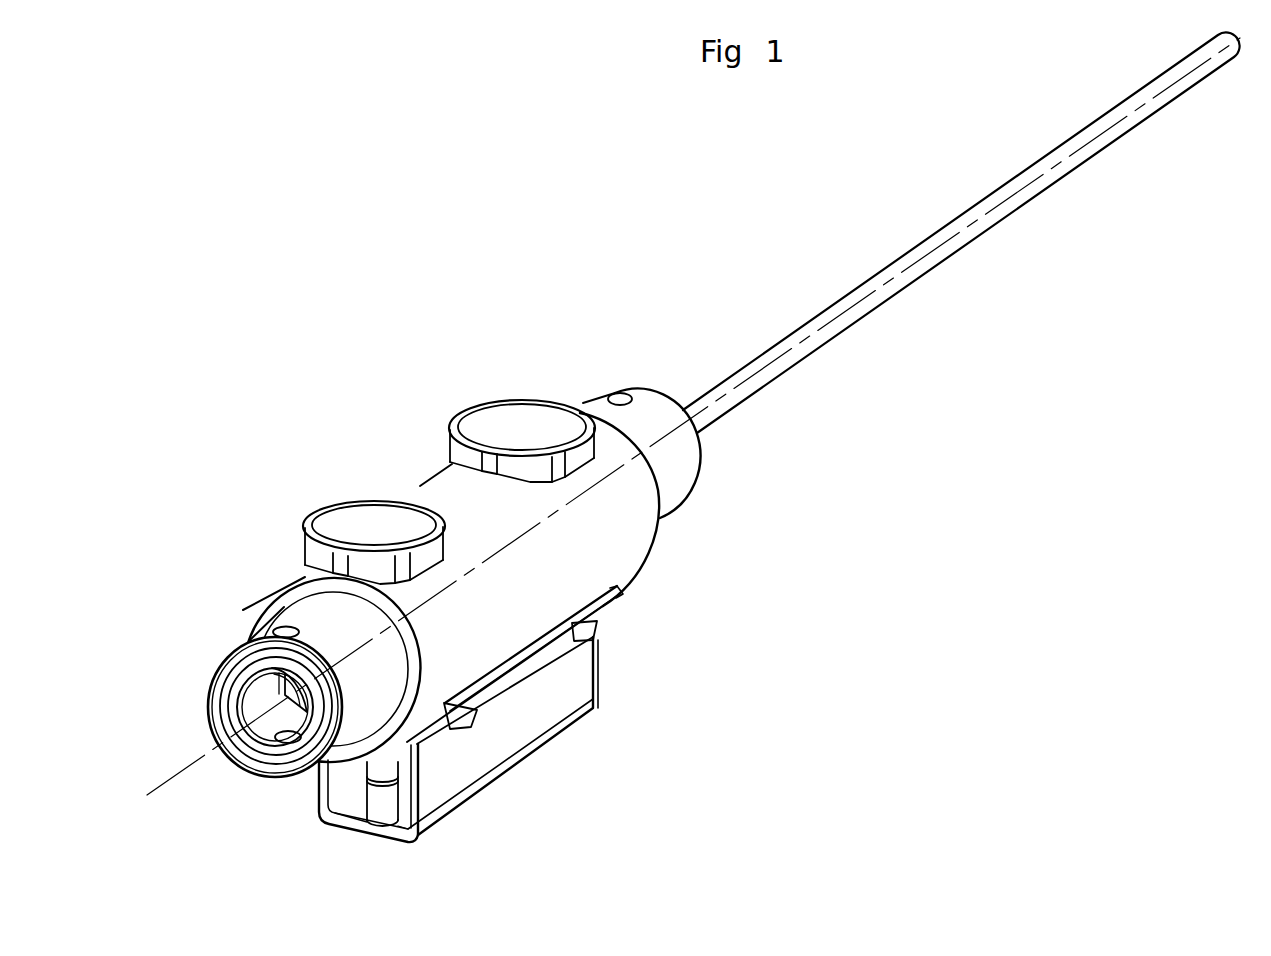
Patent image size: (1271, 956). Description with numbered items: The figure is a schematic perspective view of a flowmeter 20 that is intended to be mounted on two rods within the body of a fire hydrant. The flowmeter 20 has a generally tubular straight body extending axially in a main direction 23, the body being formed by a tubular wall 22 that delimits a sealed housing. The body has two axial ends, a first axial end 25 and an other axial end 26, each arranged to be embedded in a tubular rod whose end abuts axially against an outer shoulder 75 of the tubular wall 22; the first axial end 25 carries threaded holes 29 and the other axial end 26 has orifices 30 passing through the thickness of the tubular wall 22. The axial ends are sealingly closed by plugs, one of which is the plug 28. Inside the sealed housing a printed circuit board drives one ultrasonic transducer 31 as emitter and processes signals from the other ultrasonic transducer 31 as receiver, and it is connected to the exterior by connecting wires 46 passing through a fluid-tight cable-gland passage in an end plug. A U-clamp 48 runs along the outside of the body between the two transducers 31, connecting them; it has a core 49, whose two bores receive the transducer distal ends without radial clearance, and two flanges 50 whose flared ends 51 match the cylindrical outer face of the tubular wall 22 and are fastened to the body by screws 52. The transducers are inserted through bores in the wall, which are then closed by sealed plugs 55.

The flowmeter 20 is at (423, 482).
The tubular wall 22 is at (642, 560).
The main direction 23 is at (167, 783).
The first axial end 25 is at (593, 400).
The other axial end 26 is at (252, 640).
The plug 28 is at (277, 687).
The threaded holes 29 is at (617, 393).
The orifices 30 is at (285, 625).
The ultrasonic transducer 31 is at (380, 802).
The connecting wires 46 is at (833, 338).
The U-clamp 48 is at (460, 810).
The core 49 is at (370, 829).
The flanges 50 is at (327, 786).
The flared ends 51 is at (620, 601).
The screws 52 is at (597, 630).
The sealed plugs 55 is at (353, 513).
The outer shoulder 75 is at (300, 576).